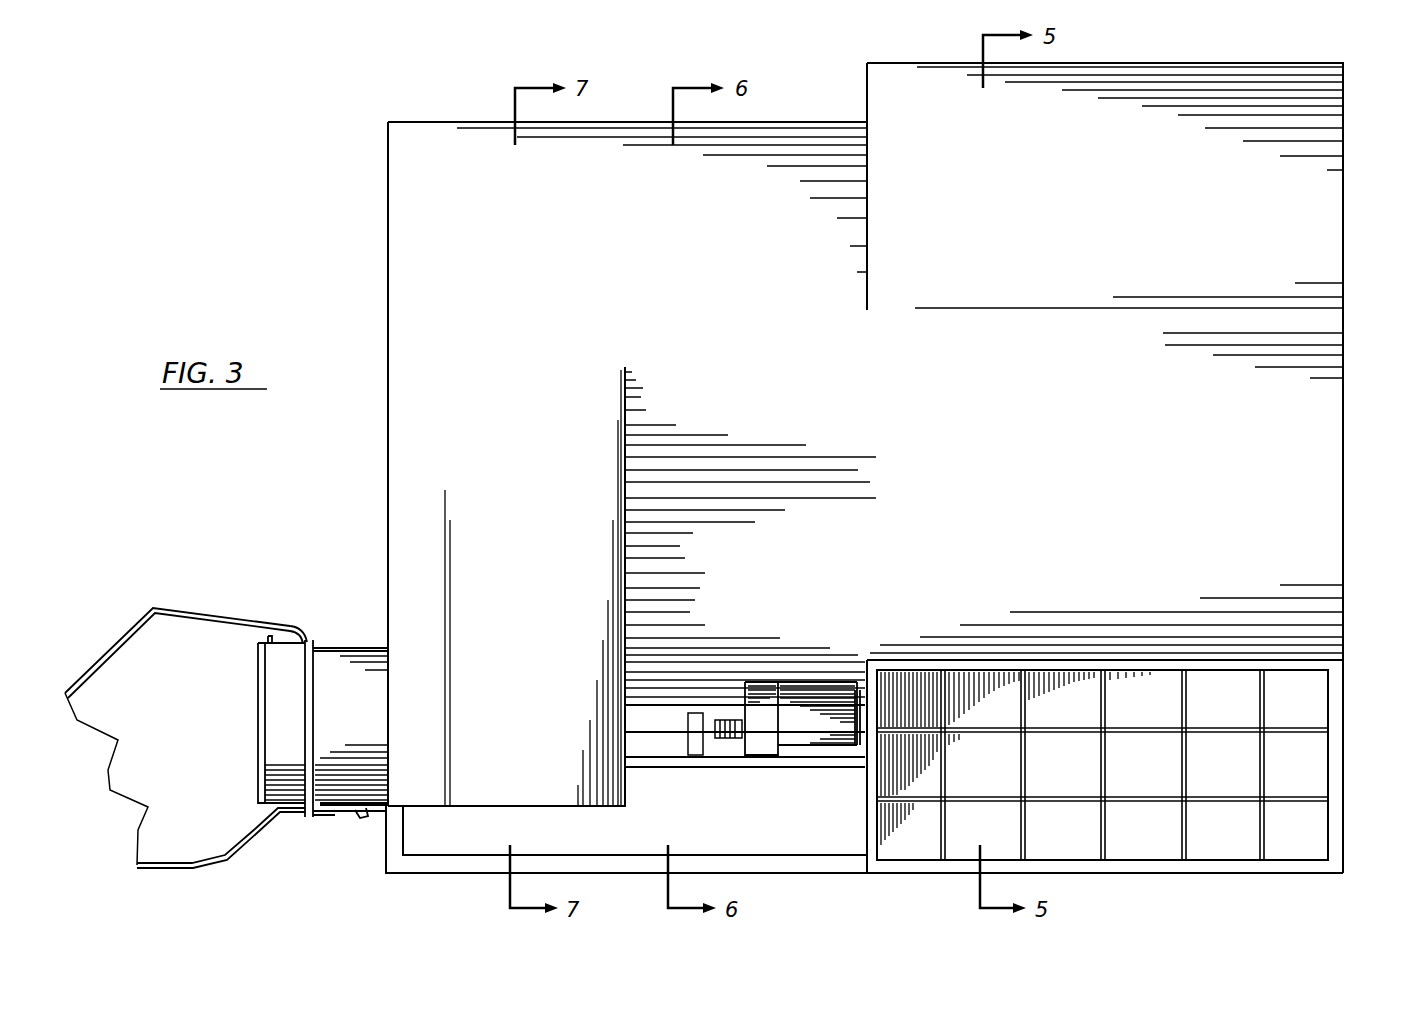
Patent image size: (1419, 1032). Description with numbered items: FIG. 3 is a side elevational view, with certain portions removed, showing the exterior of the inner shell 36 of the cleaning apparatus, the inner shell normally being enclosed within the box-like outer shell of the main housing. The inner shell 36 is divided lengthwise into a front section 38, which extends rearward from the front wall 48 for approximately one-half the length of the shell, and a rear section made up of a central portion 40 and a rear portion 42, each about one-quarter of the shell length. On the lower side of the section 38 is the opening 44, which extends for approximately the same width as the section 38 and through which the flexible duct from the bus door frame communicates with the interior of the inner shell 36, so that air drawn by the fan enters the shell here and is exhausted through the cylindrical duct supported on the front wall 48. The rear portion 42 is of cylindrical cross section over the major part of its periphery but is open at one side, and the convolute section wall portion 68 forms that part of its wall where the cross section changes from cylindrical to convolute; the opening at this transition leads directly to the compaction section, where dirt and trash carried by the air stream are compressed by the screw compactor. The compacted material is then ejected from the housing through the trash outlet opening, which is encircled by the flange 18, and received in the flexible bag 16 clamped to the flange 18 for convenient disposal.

The flexible bag 16 is at (188, 622).
The flange 18 is at (277, 743).
The inner shell 36 is at (402, 108).
The section 38 is at (1118, 440).
The central portion 40 is at (750, 420).
The rear portion 42 is at (512, 459).
The opening 44 is at (1296, 759).
The front wall 48 is at (1344, 395).
The convolute section wall portion 68 is at (575, 590).